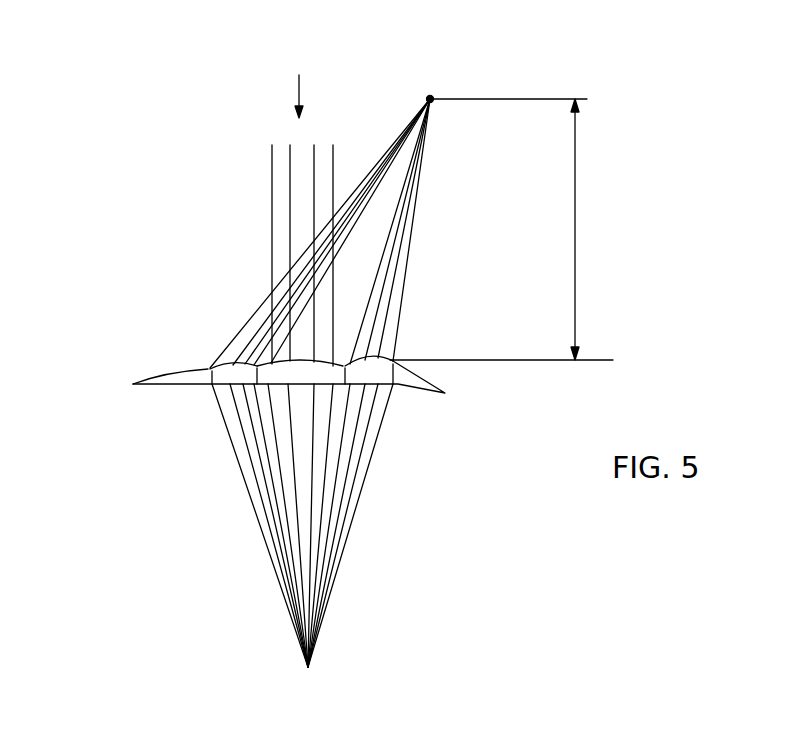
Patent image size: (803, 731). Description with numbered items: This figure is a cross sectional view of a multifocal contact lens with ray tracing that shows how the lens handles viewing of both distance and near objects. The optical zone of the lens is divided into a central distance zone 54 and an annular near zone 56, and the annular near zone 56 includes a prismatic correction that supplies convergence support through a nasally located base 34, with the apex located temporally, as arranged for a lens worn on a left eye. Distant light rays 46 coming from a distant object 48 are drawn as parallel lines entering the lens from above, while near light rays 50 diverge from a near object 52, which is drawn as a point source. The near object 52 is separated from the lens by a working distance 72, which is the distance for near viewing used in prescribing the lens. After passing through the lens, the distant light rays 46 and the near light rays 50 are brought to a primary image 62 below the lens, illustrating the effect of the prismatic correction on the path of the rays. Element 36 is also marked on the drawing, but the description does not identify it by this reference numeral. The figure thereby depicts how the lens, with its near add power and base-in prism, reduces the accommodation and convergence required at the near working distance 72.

The nasally located base 34 is at (208, 371).
The lens segment 36 is at (350, 373).
The distant light rays 46 is at (333, 158).
The distant object 48 is at (302, 38).
The near light rays 50 is at (413, 214).
The near object 52 is at (432, 96).
The central distance zone 54 is at (289, 376).
The annular near zone 56 is at (218, 376).
The primary image 62 is at (308, 668).
The working distance 72 is at (576, 208).